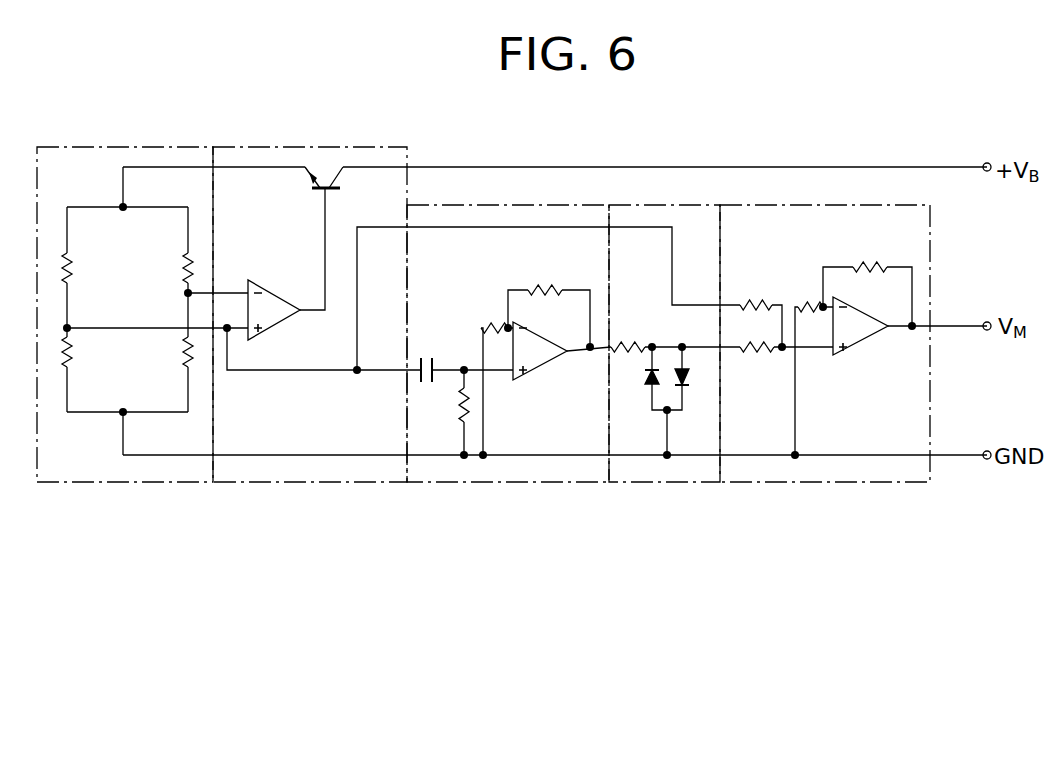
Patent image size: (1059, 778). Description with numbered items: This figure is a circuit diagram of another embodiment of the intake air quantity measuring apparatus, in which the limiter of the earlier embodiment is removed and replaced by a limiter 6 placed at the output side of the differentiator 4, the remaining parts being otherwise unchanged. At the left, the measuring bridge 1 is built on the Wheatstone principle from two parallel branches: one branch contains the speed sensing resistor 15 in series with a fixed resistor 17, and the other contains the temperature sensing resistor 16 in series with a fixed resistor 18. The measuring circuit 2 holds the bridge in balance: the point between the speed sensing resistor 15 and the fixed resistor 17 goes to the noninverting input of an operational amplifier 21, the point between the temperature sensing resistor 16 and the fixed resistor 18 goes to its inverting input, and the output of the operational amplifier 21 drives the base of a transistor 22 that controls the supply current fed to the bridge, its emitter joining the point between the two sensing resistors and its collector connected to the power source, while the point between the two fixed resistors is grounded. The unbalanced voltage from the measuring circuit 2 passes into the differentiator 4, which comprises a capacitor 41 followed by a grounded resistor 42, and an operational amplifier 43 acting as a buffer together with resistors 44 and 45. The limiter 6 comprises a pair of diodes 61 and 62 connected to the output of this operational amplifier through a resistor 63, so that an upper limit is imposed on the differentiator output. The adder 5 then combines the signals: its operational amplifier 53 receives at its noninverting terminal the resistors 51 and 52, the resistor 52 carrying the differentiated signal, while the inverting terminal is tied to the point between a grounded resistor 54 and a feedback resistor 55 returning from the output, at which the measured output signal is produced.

The measuring bridge 1 is at (150, 483).
The measuring circuit 2 is at (340, 483).
The differentiator 4 is at (537, 483).
The adder 5 is at (862, 483).
The limiter 6 is at (680, 483).
The speed sensing resistor 15 is at (74, 264).
The temperature sensing resistor 16 is at (181, 266).
The fixed resistor 17 is at (74, 347).
The fixed resistor 18 is at (181, 350).
The operational amplifier 21 is at (277, 313).
The transistor 22 is at (318, 193).
The capacitor 41 is at (429, 356).
The resistor 42 is at (458, 405).
The operational amplifier 43 is at (548, 352).
The resistor 44 is at (498, 322).
The resistor 45 is at (539, 286).
The resistor 51 is at (744, 300).
The resistor 52 is at (762, 355).
The operational amplifier 53 is at (869, 330).
The resistor 54 is at (809, 302).
The resistor 55 is at (866, 263).
The diode 61 is at (646, 378).
The diode 62 is at (690, 376).
The resistor 63 is at (623, 342).